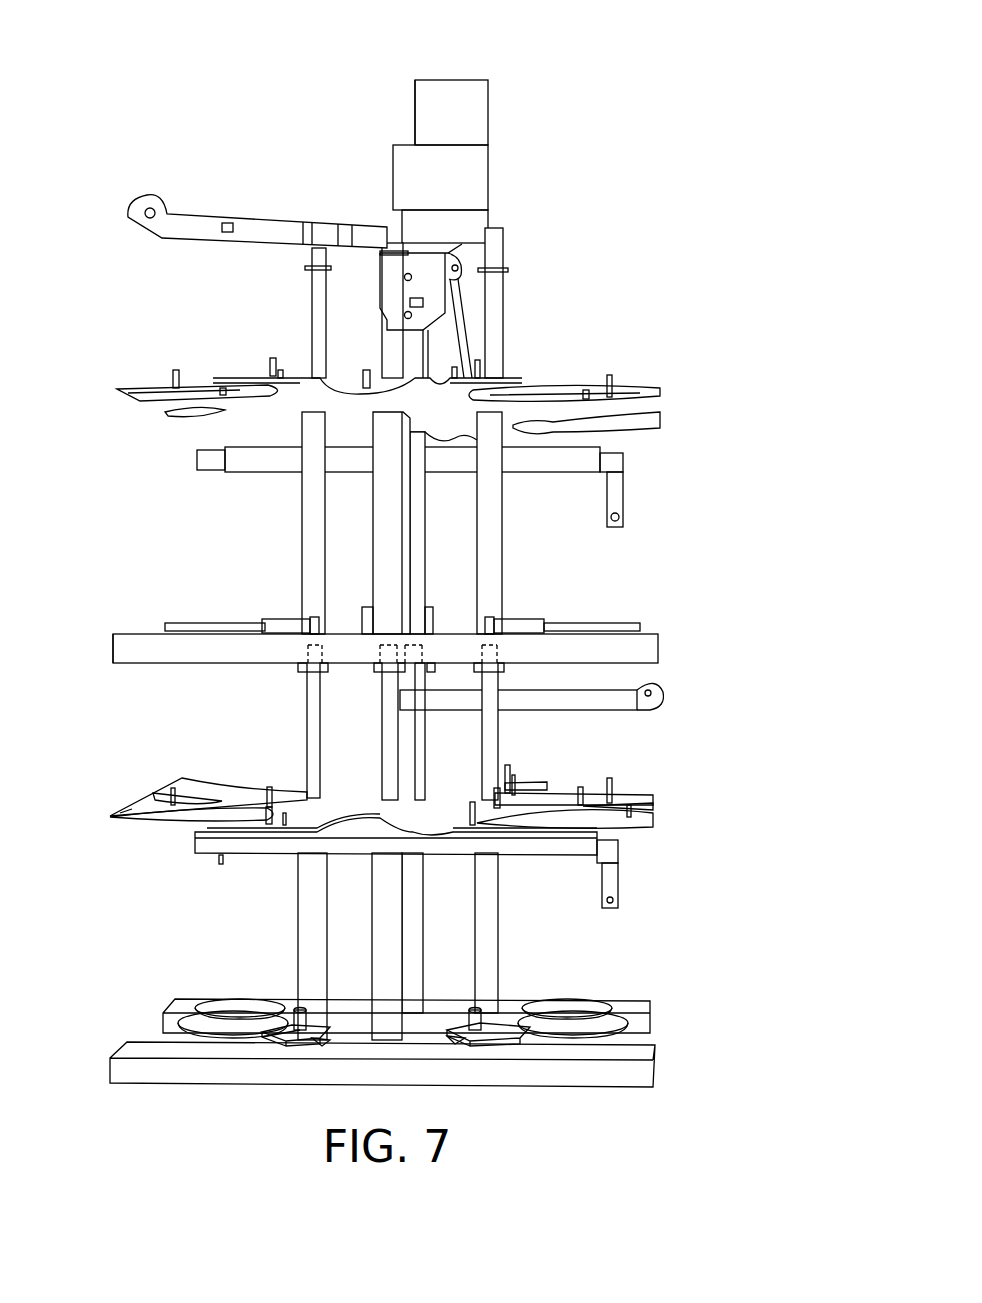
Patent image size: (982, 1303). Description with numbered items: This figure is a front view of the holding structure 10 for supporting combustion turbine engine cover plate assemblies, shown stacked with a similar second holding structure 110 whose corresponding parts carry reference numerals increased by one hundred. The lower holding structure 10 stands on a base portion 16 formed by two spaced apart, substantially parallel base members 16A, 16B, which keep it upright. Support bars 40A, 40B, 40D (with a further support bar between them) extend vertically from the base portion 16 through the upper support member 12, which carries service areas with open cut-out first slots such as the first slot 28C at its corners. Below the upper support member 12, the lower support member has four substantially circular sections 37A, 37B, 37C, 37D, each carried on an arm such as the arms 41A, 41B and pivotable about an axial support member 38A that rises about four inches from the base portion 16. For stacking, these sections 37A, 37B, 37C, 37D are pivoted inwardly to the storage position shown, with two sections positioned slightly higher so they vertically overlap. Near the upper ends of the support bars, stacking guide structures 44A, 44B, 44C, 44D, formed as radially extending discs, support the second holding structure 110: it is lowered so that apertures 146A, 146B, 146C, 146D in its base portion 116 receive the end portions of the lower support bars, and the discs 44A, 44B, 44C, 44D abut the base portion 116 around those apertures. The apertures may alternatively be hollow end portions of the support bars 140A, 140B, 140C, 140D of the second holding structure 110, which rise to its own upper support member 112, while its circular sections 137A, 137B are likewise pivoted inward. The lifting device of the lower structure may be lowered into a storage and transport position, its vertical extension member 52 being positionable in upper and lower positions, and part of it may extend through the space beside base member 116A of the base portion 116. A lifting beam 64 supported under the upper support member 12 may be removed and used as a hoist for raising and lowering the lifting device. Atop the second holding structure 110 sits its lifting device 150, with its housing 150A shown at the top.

The holding structure 10 is at (661, 763).
The upper support member 12 is at (182, 779).
The base portion 16 is at (106, 1040).
The base member 16A is at (655, 1074).
The base member 16B is at (655, 1026).
The first slot 28C is at (537, 782).
The substantially circular section 37A is at (228, 1027).
The substantially circular section 37B is at (577, 1027).
The substantially circular section 37C is at (575, 1005).
The substantially circular section 37D is at (243, 1005).
The axial support member 38A is at (300, 1036).
The support bar 40A is at (389, 749).
The support bar 40B is at (492, 730).
The support bar 40D is at (313, 759).
The arm 41A is at (284, 1032).
The arm 41B is at (482, 1024).
The stacking guide structure 44A is at (376, 669).
The stacking guide structure 44B is at (500, 672).
The stacking guide structure 44C is at (431, 672).
The stacking guide structure 44D is at (299, 669).
The vertical extension member 52 is at (407, 721).
The lifting beam 64 is at (612, 886).
The second holding structure 110 is at (573, 238).
The upper support member 112 is at (660, 394).
The base portion 116 is at (670, 634).
The base member 116A is at (121, 651).
The substantially circular section 137A is at (167, 621).
The substantially circular section 137B is at (633, 622).
The support bar 140A is at (384, 493).
The support bar 140B is at (492, 490).
The support bar 140C is at (418, 497).
The support bar 140D is at (313, 507).
The aperture 146A is at (390, 642).
The aperture 146B is at (493, 640).
The aperture 146C is at (415, 643).
The aperture 146D is at (308, 645).
The lifting device 150 is at (481, 78).
The drive unit housing 150A is at (415, 110).